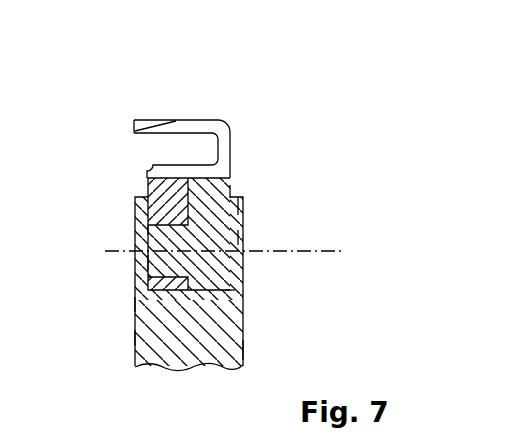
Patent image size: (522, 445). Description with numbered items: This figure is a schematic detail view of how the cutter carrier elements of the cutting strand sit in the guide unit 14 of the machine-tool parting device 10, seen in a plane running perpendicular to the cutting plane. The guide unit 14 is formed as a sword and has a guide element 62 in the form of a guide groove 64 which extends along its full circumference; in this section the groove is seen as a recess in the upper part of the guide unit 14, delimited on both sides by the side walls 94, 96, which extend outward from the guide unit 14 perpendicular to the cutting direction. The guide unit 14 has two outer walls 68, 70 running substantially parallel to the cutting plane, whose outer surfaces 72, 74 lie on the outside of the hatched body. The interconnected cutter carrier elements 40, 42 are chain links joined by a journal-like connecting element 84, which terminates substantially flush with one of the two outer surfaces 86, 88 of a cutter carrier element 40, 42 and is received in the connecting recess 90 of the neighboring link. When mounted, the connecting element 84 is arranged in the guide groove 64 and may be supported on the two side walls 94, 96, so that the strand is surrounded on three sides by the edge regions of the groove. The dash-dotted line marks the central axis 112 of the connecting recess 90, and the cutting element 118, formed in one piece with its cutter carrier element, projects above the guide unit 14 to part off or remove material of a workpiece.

The machine-tool parting device 10 is at (302, 82).
The cutting element 118 is at (214, 119).
The cutter carrier element 40 is at (158, 205).
The outer surface 88 is at (150, 186).
The connecting recess 90 is at (150, 283).
The side wall 96 is at (150, 229).
The connecting element 84 is at (150, 262).
The cutter carrier element 42 is at (232, 192).
The outer surface 72 is at (243, 318).
The guide unit 14 is at (232, 340).
The outer surface 86 is at (238, 207).
The side wall 94 is at (238, 236).
The guide element 62 is at (274, 297).
The guide groove 64 is at (232, 300).
The outer wall 68 is at (243, 350).
The outer wall 70 is at (135, 304).
The outer surface 74 is at (135, 338).
The central axis 112 is at (337, 250).